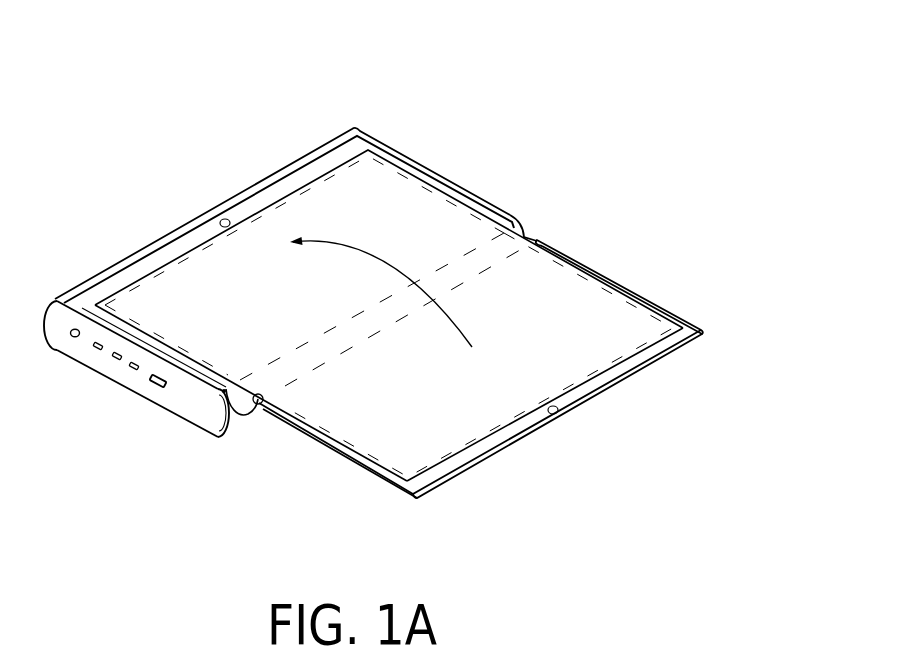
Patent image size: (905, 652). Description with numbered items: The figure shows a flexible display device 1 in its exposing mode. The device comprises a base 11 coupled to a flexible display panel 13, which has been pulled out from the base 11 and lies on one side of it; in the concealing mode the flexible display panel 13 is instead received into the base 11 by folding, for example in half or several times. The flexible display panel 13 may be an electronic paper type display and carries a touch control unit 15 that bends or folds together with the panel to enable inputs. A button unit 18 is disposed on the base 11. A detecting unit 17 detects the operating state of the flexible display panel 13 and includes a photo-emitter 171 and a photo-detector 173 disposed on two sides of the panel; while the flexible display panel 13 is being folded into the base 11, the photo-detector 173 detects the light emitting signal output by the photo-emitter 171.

The flexible display device 1 is at (368, 296).
The base 11 is at (252, 186).
The flexible display panel 13 is at (597, 276).
The touch control unit 15 is at (479, 195).
The detecting unit 17 is at (358, 397).
The photo-emitter 171 is at (226, 229).
The photo-detector 173 is at (547, 408).
The button unit 18 is at (110, 360).